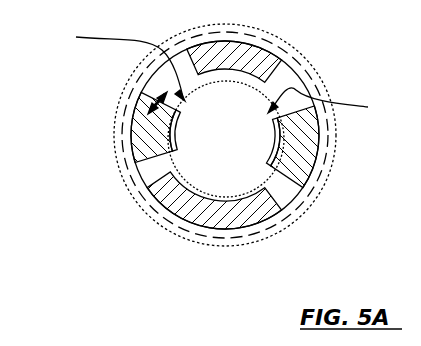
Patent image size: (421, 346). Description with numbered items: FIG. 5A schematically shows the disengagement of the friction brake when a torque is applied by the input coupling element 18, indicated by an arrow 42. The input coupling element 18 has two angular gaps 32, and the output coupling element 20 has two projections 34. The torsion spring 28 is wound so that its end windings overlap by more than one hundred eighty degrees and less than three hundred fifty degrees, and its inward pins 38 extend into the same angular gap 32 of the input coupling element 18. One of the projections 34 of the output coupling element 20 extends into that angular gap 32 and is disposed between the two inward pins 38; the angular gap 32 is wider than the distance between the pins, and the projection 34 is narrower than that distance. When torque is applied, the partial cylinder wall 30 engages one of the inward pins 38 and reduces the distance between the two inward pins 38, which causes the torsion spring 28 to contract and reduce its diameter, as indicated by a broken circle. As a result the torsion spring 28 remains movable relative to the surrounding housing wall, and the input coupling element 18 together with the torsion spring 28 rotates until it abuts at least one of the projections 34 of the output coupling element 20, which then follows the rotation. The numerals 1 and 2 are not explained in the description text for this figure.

The device 1 is at (267, 135).
The housing 2 is at (271, 135).
The input coupling element 18 is at (133, 121).
The output coupling element 20 is at (154, 197).
The torsion spring 28 is at (146, 78).
The partial cylinder wall 30 is at (292, 143).
The angular gap 32 is at (233, 82).
The projection 34 is at (267, 58).
The inward pin 38 is at (221, 70).
The arrow 42 is at (143, 90).